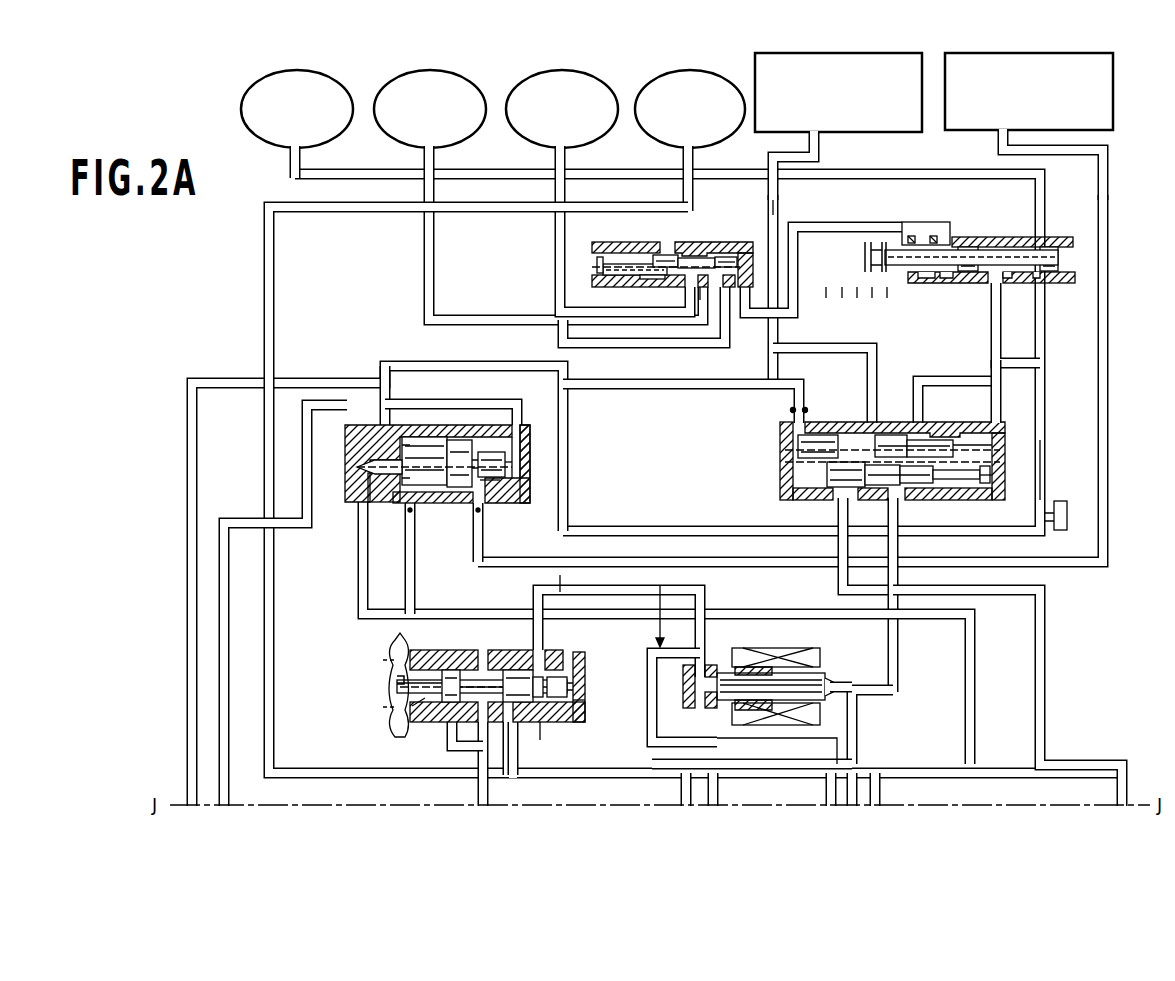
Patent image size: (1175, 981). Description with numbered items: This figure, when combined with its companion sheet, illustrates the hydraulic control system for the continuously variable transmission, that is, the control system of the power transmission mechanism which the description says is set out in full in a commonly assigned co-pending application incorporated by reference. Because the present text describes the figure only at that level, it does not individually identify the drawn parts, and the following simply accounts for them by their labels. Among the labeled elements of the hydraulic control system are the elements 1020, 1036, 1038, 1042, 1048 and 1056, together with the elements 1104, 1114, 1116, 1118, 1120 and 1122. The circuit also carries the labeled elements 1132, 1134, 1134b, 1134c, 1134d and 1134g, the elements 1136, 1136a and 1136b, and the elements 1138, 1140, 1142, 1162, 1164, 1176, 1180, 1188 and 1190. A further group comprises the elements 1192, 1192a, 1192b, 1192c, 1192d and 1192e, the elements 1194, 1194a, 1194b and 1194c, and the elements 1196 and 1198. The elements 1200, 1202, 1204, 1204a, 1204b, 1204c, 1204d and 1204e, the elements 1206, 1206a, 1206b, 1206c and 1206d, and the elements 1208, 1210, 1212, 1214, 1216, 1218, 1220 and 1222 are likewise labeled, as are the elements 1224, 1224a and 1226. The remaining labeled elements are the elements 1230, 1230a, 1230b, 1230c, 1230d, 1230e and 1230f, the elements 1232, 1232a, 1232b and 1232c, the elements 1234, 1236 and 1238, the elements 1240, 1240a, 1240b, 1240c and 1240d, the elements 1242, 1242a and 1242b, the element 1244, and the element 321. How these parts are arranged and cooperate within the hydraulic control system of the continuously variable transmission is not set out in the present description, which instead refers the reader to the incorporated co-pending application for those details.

The pitot tube (engine speed) 1020 is at (1114, 120).
The forward clutch 1036 is at (352, 132).
The reverse clutch 1038 is at (492, 132).
The drive pulley 1042 is at (618, 132).
The pitot tube (drive pulley speed) 1048 is at (862, 136).
The driven pulley 1056 is at (745, 136).
The manual valve spool 1104 is at (1000, 230).
The lever 1114 is at (385, 641).
The valve 1116 is at (419, 447).
The solenoid 1118 is at (783, 695).
The valve 1120 is at (795, 472).
The passage 1122 is at (768, 222).
The line pressure passage 1132 is at (340, 214).
The manual valve body 1134 is at (988, 266).
The port 1134b is at (947, 280).
The port 1134c is at (1000, 285).
The port 1134d is at (1040, 285).
The port 1134g is at (925, 280).
The shift position sensor 1136 is at (898, 240).
The spool land 1136a is at (970, 247).
The spool land 1136b is at (1048, 247).
The passage 1138 is at (882, 222).
The passage 1140 is at (1040, 455).
The passage 1142 is at (958, 180).
The drain passage 1162 is at (578, 661).
The chamber 1164 is at (578, 700).
The passage 1176 is at (899, 672).
The passage 1180 is at (556, 242).
The passage 1188 is at (185, 470).
The passage 1190 is at (226, 520).
The valve body 1192 is at (471, 665).
The port 1192a is at (445, 725).
The port 1192b is at (478, 760).
The port 1192c is at (512, 722).
The port 1192d is at (545, 725).
The port 1192e is at (568, 690).
The spool 1194 is at (555, 690).
The land 1194a is at (450, 675).
The land 1194b is at (510, 672).
The land 1194c is at (550, 676).
The spring 1196 is at (410, 708).
The spring seat 1198 is at (395, 690).
The passage 1200 is at (692, 497).
The passage 1202 is at (560, 595).
The spool 1204 is at (445, 440).
The land 1204a is at (400, 462).
The port 1204b is at (405, 505).
The port 1204c is at (480, 505).
The land 1204d is at (505, 480).
The land 1204e is at (512, 468).
The spool 1206 is at (510, 462).
The port 1206a is at (382, 384).
The land 1206b is at (452, 440).
The land 1206c is at (480, 455).
The chamber 1206d is at (515, 430).
The spring 1208 is at (395, 425).
The passage 1210 is at (360, 592).
The passage 1212 is at (707, 606).
The passage 1214 is at (1106, 148).
The port 1216 is at (398, 510).
The port 1218 is at (480, 525).
The chamber 1220 is at (520, 416).
The passage 1222 is at (682, 698).
The solenoid coil 1224 is at (772, 648).
The solenoid coil 1224a is at (722, 672).
The passage 1226 is at (655, 640).
The spool 1230 is at (830, 480).
The port 1230a is at (792, 418).
The port 1230b is at (798, 435).
The land 1230c is at (864, 430).
The port 1230d is at (870, 420).
The port 1230e is at (928, 425).
The chamber 1230f is at (1010, 443).
The spool 1232 is at (990, 475).
The port 1232a is at (858, 500).
The port 1232b is at (910, 492).
The port 1232c is at (982, 486).
The land 1234 is at (945, 440).
The passage 1236 is at (770, 376).
The passage 1238 is at (920, 422).
The valve 1240 is at (684, 246).
The land 1240a is at (652, 245).
The land 1240b is at (742, 232).
The land 1240c is at (740, 243).
The spool 1240d is at (750, 244).
The spool 1242 is at (603, 272).
The land 1242a is at (648, 280).
The port 1242b is at (703, 290).
The passage 1244 is at (622, 290).
The orifice 321 is at (1067, 522).